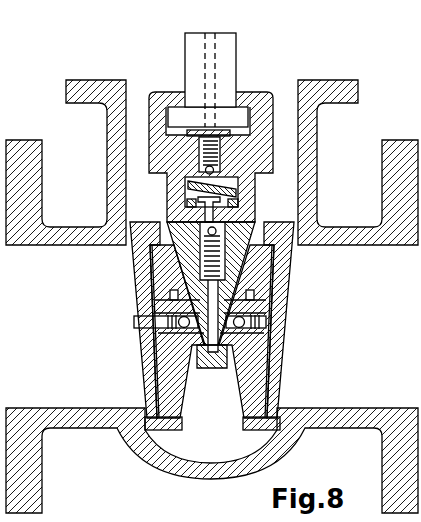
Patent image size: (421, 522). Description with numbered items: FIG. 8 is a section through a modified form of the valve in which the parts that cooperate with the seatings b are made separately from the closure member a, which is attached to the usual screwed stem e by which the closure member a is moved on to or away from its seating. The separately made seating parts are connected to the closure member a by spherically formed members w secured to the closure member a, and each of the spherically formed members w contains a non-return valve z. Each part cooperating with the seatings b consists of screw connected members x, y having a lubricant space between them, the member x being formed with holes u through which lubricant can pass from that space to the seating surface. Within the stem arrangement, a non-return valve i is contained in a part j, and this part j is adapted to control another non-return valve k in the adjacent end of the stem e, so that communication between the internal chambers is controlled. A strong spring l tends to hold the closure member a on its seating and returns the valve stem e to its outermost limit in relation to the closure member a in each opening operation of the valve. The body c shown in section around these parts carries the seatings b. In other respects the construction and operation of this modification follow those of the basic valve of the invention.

The closure member a is at (211, 371).
The seatings b is at (296, 226).
The valve body c is at (88, 231).
The screwed stem e is at (232, 52).
The non-return valve i is at (190, 244).
The part j is at (231, 208).
The non-return valve k is at (206, 171).
The strong spring l is at (230, 198).
The holes u is at (283, 233).
The spherically formed members w is at (196, 302).
The screw connected member x is at (150, 272).
The screw connected member y is at (168, 378).
The non-return valve z is at (167, 322).